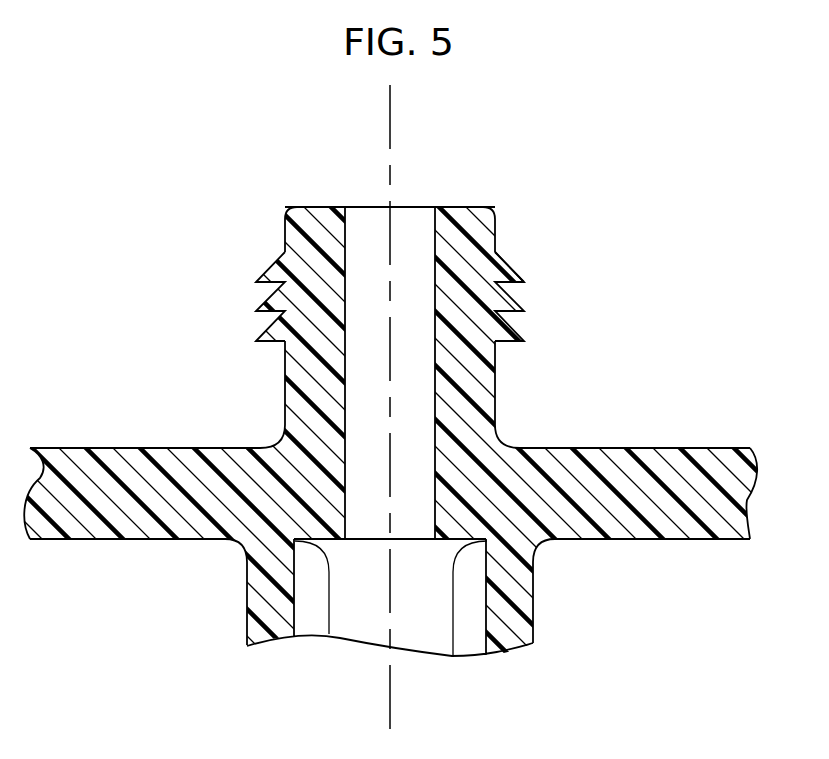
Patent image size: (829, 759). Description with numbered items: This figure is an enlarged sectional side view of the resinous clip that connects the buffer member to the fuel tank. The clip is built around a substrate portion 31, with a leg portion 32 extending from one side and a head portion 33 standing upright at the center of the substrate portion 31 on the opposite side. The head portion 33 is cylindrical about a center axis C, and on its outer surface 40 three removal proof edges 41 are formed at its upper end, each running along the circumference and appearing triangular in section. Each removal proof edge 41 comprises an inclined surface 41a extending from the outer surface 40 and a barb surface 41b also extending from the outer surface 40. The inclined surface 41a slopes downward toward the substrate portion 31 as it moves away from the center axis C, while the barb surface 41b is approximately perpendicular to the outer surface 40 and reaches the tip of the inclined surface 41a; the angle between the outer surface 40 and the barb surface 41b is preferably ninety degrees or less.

The substrate portion 31 is at (676, 447).
The leg portion 32 is at (545, 597).
The head portion 33 is at (460, 208).
The outer surface 40 is at (285, 232).
The removal proof edge 41 is at (268, 266).
The inclined surface 41a is at (506, 261).
The barb surface 41b is at (523, 289).
The center axis C is at (389, 137).